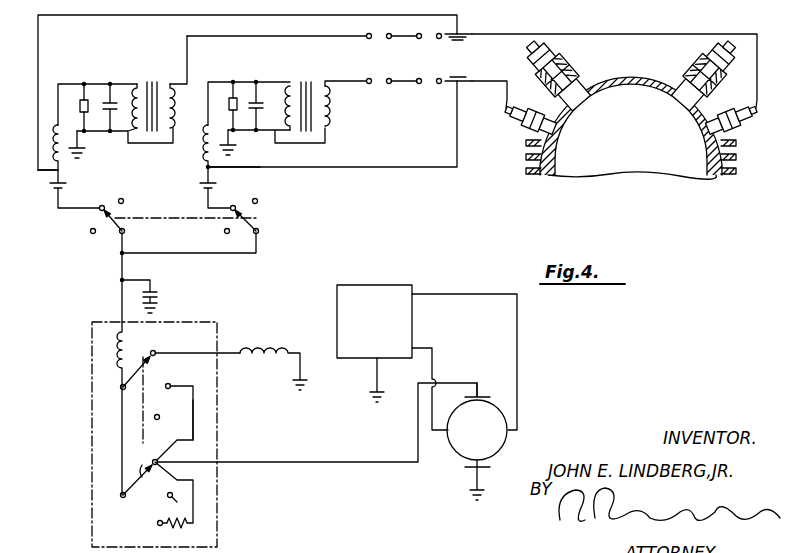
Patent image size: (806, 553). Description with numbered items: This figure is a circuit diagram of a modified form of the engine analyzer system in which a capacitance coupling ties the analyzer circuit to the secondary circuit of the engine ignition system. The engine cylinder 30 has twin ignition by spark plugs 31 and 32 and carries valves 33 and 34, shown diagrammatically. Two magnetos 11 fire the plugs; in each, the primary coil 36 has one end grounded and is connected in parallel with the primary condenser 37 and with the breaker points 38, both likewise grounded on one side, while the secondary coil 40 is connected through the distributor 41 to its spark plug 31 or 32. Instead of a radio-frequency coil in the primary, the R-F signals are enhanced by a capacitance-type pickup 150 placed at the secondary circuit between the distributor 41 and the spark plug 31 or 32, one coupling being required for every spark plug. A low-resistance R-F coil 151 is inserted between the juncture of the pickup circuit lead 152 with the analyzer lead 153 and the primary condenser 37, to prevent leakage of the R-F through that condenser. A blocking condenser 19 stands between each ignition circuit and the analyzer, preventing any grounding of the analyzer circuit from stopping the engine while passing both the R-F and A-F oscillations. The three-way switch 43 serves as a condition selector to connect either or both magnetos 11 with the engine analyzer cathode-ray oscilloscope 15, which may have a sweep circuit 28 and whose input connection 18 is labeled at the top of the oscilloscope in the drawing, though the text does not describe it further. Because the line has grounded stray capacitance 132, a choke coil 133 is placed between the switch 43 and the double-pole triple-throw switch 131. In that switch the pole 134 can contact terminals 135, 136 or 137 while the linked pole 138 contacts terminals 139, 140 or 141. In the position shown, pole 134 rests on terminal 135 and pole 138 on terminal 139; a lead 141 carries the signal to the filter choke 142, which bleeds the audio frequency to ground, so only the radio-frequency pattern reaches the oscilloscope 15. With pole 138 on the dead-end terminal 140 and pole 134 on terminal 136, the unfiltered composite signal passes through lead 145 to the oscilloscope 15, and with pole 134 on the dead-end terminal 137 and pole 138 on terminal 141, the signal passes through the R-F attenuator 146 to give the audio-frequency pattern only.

The magneto 11 is at (243, 110).
The engine analyzer cathode-ray oscilloscope 15 is at (507, 440).
The breaker contact 18 is at (483, 395).
The blocking condenser 19 is at (70, 187).
The sweep circuit 28 is at (383, 290).
The internal combustion engine cylinder 30 is at (671, 170).
The spark plug 31 is at (528, 116).
The spark plug 32 is at (735, 119).
The valve 33 is at (579, 105).
The valve 34 is at (687, 105).
The primary coil 36 is at (133, 117).
The primary condenser 37 is at (112, 100).
The breaker points 38 is at (85, 99).
The secondary coil 40 is at (176, 106).
The distributor 41 is at (399, 36).
The three-way switch 43 is at (142, 253).
The switch 131 is at (200, 322).
The grounded stray capacitance 132 is at (158, 291).
The choke coil 133 is at (117, 352).
The pole 134 is at (142, 364).
The terminal 135 is at (158, 353).
The terminal 136 is at (170, 383).
The dead-end terminal 137 is at (159, 416).
The pole 138 is at (144, 467).
The terminal 139 is at (160, 461).
The dead-end terminal 140 is at (161, 506).
The terminal and lead 141 is at (215, 352).
The filter choke 142 is at (252, 358).
The lead 145 is at (194, 418).
The R-F attenuator 146 is at (172, 528).
The capacitance-type pickup 150 is at (464, 33).
The low-resistance R-F coil 151 is at (66, 150).
The pickup circuit lead 152 is at (57, 176).
The analyzer lead 153 is at (63, 209).